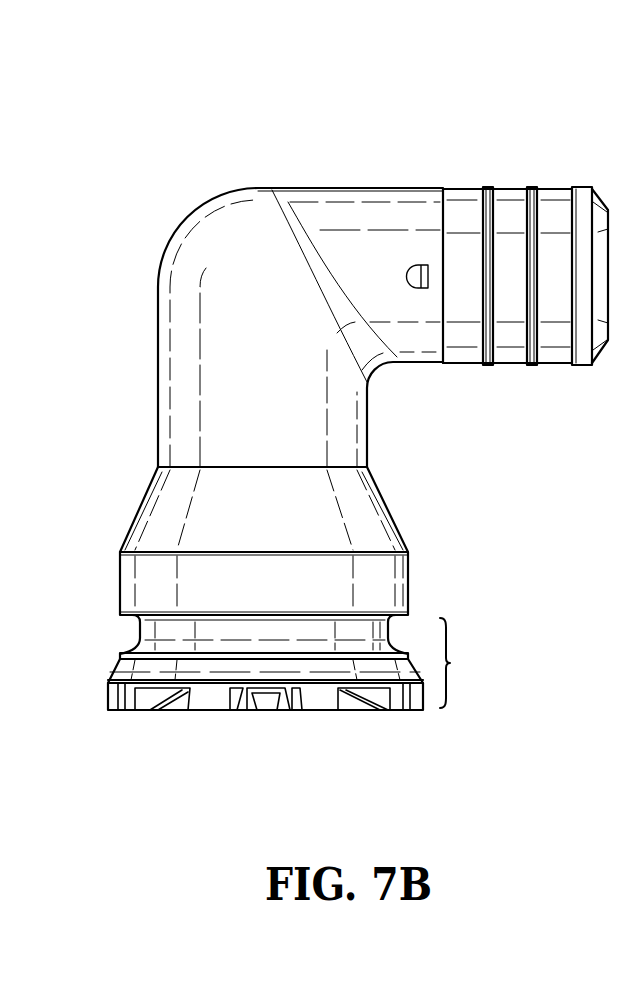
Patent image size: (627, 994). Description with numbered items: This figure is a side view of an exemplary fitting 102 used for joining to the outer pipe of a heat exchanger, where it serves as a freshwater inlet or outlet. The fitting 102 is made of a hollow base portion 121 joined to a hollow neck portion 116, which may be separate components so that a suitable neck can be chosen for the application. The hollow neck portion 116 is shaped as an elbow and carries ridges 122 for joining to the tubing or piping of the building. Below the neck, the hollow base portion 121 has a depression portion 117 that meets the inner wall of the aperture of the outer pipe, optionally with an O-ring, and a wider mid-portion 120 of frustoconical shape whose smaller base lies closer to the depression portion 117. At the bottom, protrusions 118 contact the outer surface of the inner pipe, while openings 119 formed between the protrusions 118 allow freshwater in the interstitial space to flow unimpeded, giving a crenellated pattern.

The fitting 102 is at (178, 148).
The hollow neck portion 116 is at (182, 412).
The depression portion 117 is at (145, 628).
The protrusions 118 is at (213, 700).
The openings 119 is at (352, 714).
The mid-portion 120 is at (122, 665).
The hollow base portion 121 is at (264, 698).
The ridges 122 is at (532, 188).